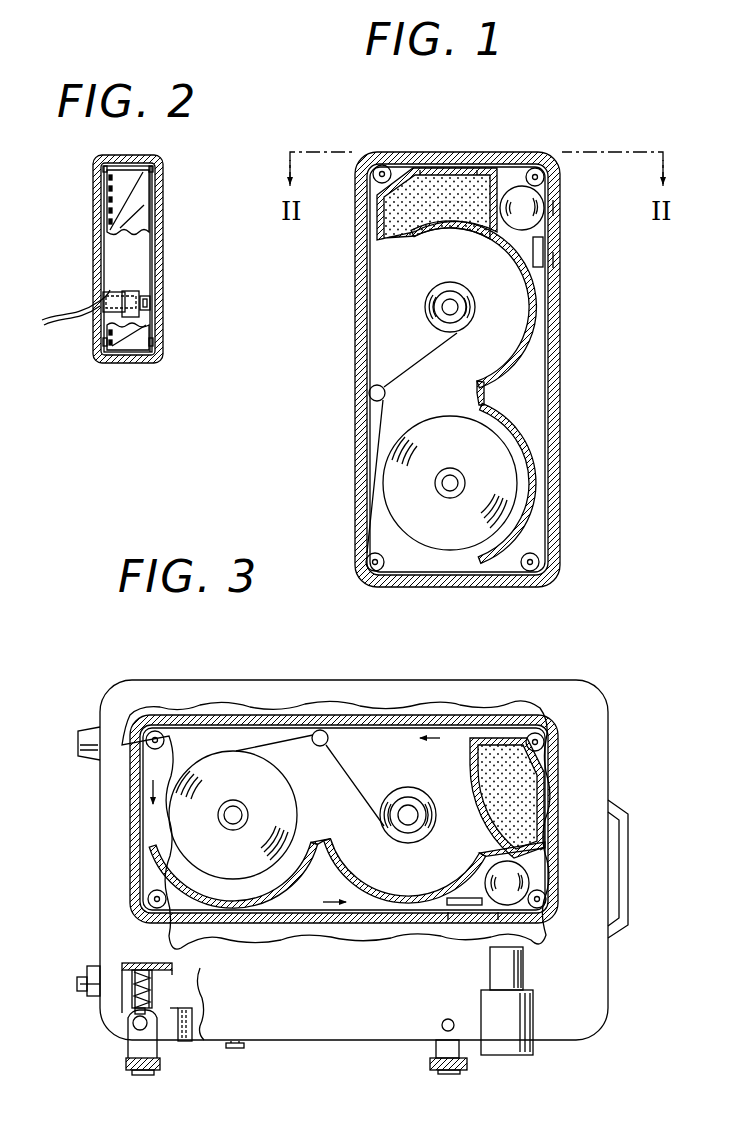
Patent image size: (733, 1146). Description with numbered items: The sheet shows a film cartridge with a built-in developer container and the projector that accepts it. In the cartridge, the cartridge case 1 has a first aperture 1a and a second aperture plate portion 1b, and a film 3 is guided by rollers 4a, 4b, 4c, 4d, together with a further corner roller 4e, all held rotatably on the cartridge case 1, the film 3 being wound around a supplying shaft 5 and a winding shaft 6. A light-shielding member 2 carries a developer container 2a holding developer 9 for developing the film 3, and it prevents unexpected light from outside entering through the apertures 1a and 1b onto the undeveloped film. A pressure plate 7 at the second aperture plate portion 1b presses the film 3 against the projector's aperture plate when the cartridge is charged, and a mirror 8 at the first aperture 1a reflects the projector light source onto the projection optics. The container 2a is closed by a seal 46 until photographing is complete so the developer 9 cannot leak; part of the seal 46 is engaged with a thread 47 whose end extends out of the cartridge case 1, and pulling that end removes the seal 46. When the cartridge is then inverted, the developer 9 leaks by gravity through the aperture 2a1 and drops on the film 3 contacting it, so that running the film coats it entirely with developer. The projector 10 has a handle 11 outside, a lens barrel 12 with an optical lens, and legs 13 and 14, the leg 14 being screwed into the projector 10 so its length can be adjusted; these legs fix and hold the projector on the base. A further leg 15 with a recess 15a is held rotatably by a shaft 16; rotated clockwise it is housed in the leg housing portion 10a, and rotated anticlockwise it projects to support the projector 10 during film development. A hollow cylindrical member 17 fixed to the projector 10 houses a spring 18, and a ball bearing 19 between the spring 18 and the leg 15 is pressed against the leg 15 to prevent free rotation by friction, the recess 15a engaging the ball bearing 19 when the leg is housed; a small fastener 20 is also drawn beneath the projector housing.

In FIG. 1, the cartridge case 1 is at (560, 374).
In FIG. 2, the cartridge case 1 is at (163, 263).
In FIG. 3, the cartridge case 1 is at (233, 716).
In FIG. 1, the first aperture 1a is at (554, 208).
In FIG. 3, the first aperture 1a is at (507, 920).
In FIG. 1, the second aperture plate portion 1b is at (557, 260).
In FIG. 3, the second aperture plate portion 1b is at (453, 920).
In FIG. 1, the light-shielding member 2 is at (534, 468).
In FIG. 3, the light-shielding member 2 is at (370, 893).
In FIG. 1, the developer container 2a is at (432, 168).
In FIG. 2, the developer container 2a is at (144, 283).
In FIG. 1, the aperture of the container 2a1 is at (477, 168).
In FIG. 2, the aperture of the container 2a1 is at (131, 305).
In FIG. 3, the aperture of the container 2a1 is at (545, 852).
In FIG. 1, the film 3 is at (544, 408).
In FIG. 2, the film 3 is at (136, 218).
In FIG. 3, the film 3 is at (365, 728).
In FIG. 1, the roller 4a is at (369, 393).
In FIG. 3, the roller 4a is at (320, 730).
In FIG. 1, the roller 4b is at (373, 156).
In FIG. 2, the roller 4b is at (164, 158).
In FIG. 3, the roller 4b is at (536, 734).
In FIG. 1, the roller 4c is at (535, 168).
In FIG. 2, the roller 4c is at (98, 338).
In FIG. 3, the roller 4c is at (545, 905).
In FIG. 1, the roller 4d is at (538, 570).
In FIG. 3, the roller 4d is at (150, 895).
In FIG. 1, the screw 4e is at (358, 575).
In FIG. 3, the screw 4e is at (156, 732).
In FIG. 1, the supplying shaft 5 is at (443, 307).
In FIG. 3, the supplying shaft 5 is at (412, 810).
In FIG. 1, the winding shaft 6 is at (443, 483).
In FIG. 3, the winding shaft 6 is at (233, 806).
In FIG. 1, the pressure plate 7 is at (538, 240).
In FIG. 3, the pressure plate 7 is at (433, 896).
In FIG. 1, the mirror 8 is at (528, 207).
In FIG. 3, the mirror 8 is at (516, 890).
In FIG. 1, the developer 9 is at (403, 198).
In FIG. 3, the developer 9 is at (488, 758).
In FIG. 3, the projector 10 is at (136, 698).
In FIG. 3, the leg housing portion 10a is at (192, 1036).
In FIG. 3, the handle 11 is at (620, 814).
In FIG. 3, the lens barrel 12 is at (518, 1052).
In FIG. 3, the leg 13 is at (88, 732).
In FIG. 3, the leg 14 is at (82, 968).
In FIG. 3, the leg 15 is at (137, 1072).
In FIG. 3, the recess 15a is at (158, 1025).
In FIG. 3, the shaft 16 is at (138, 1030).
In FIG. 3, the hollow cylindrical member 17 is at (122, 975).
In FIG. 3, the spring 18 is at (155, 987).
In FIG. 3, the ball bearing 19 is at (137, 1014).
In FIG. 3, the screw 20 is at (236, 1048).
In FIG. 2, the seal 46 is at (138, 312).
In FIG. 2, the thread 47 is at (54, 312).